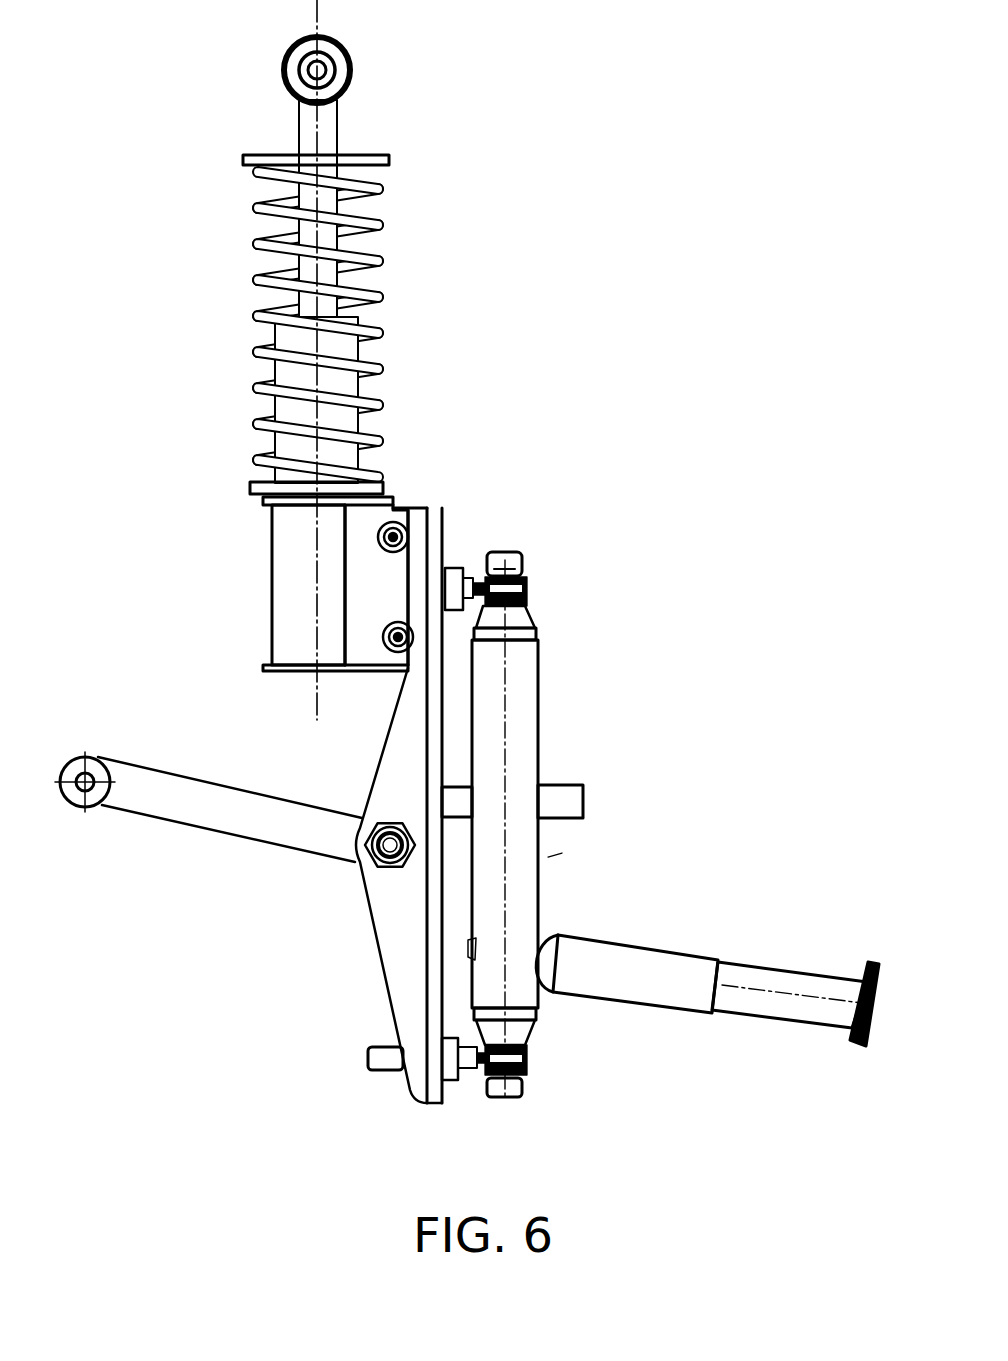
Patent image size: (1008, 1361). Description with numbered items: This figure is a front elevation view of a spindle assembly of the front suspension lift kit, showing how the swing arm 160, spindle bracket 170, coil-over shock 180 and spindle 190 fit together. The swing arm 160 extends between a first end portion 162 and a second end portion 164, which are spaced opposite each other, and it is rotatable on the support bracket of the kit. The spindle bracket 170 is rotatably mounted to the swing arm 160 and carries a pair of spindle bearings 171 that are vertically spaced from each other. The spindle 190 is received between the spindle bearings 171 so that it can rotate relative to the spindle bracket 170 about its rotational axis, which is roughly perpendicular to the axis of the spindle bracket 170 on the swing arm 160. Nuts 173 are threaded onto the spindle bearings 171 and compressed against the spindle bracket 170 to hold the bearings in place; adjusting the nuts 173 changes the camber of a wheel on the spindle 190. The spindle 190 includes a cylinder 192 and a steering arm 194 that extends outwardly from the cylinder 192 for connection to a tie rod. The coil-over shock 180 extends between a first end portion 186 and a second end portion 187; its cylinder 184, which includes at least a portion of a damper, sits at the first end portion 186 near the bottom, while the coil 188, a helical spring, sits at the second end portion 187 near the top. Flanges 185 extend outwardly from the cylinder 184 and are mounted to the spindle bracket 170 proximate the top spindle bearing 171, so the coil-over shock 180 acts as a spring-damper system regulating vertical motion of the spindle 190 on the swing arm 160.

The swing arm 160 is at (230, 807).
The first end portion 162 is at (363, 871).
The second end portion 164 is at (62, 802).
The spindle bracket 170 is at (424, 540).
The spindle bearings 171 is at (508, 560).
The nuts 173 is at (523, 576).
The coil-over shock 180 is at (316, 360).
The cylinder 184 is at (312, 567).
The flanges 185 is at (390, 583).
The first end portion 186 is at (266, 661).
The second end portion 187 is at (352, 62).
The coil 188 is at (268, 208).
The spindle 190 is at (505, 832).
The cylinder 192 is at (523, 752).
The steering arm 194 is at (560, 801).